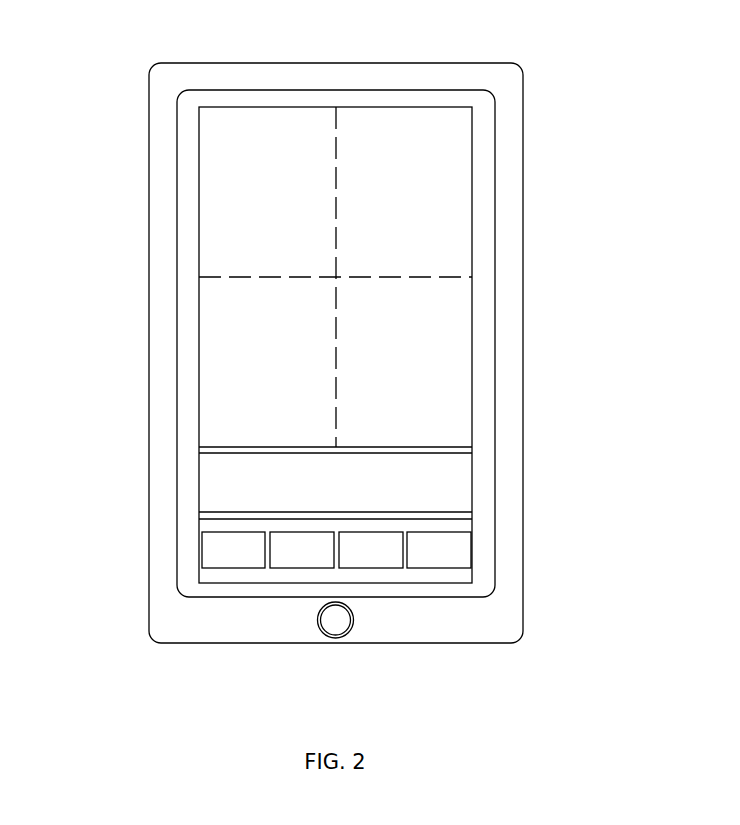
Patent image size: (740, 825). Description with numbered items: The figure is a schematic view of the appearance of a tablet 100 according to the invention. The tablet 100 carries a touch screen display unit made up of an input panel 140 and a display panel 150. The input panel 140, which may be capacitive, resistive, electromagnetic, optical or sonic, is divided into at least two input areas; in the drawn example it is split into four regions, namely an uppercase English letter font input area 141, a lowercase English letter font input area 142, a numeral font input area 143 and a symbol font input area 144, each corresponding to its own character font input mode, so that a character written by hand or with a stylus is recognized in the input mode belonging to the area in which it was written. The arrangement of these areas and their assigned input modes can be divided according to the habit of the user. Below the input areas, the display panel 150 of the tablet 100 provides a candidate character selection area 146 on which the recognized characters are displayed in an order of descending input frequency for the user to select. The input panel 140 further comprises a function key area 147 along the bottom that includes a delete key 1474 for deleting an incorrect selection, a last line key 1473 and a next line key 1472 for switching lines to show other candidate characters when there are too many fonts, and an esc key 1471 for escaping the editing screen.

The tablet 100 is at (568, 29).
The display panel 150 is at (495, 193).
The input panel 140 is at (472, 237).
The uppercase English letter font input area 141 is at (216, 155).
The lowercase English letter font input area 142 is at (450, 163).
The numeral font input area 143 is at (216, 322).
The symbol font input area 144 is at (450, 352).
The candidate character selection area 146 is at (428, 482).
The function key area 147 is at (402, 607).
The esc key 1471 is at (440, 568).
The next line key 1472 is at (371, 568).
The last line key 1473 is at (302, 568).
The delete key 1474 is at (232, 568).